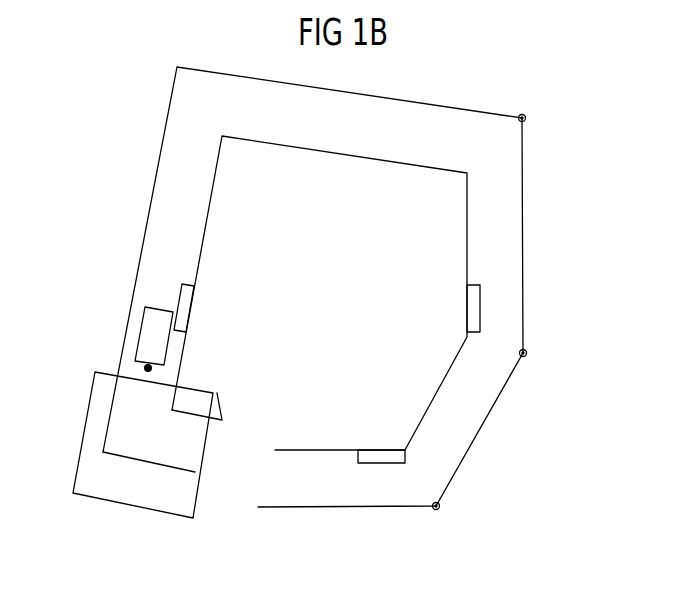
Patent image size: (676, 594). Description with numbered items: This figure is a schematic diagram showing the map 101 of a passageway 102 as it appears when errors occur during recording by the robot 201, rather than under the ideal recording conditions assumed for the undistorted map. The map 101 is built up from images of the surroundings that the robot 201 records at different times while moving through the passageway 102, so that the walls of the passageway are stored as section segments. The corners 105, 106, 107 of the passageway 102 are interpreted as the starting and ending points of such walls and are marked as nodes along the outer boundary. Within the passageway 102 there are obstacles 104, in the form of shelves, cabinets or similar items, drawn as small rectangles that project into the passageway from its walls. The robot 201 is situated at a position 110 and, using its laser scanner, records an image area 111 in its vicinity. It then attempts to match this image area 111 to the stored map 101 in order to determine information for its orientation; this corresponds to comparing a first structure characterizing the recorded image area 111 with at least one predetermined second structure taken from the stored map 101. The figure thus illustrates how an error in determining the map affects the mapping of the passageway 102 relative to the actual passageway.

The map 101 is at (566, 270).
The passageway 102 is at (511, 212).
The obstacles 104 is at (468, 308).
The corner 105 is at (438, 510).
The corner 106 is at (526, 356).
The corner 107 is at (525, 116).
The position 110 is at (145, 367).
The image area 111 is at (205, 403).
The robot 201 is at (149, 334).